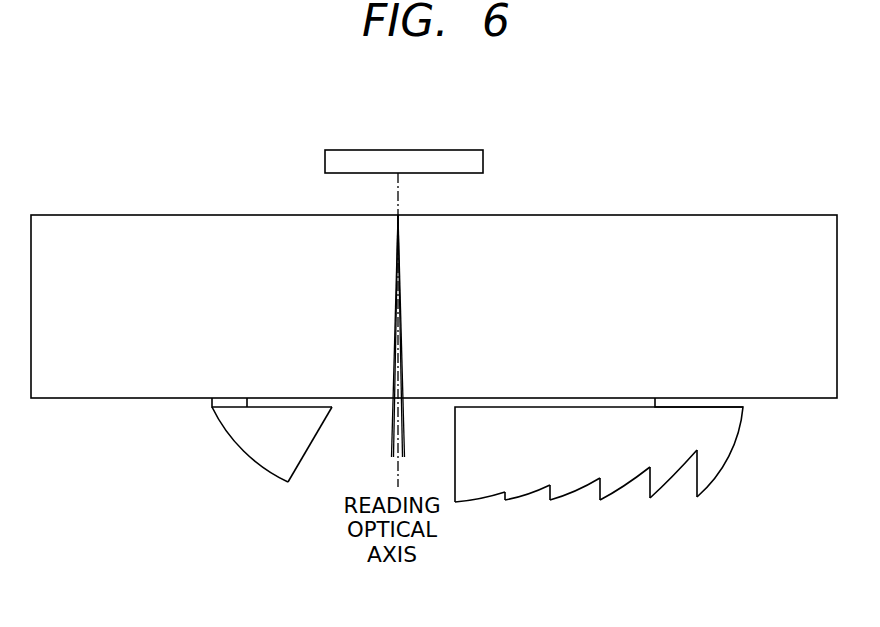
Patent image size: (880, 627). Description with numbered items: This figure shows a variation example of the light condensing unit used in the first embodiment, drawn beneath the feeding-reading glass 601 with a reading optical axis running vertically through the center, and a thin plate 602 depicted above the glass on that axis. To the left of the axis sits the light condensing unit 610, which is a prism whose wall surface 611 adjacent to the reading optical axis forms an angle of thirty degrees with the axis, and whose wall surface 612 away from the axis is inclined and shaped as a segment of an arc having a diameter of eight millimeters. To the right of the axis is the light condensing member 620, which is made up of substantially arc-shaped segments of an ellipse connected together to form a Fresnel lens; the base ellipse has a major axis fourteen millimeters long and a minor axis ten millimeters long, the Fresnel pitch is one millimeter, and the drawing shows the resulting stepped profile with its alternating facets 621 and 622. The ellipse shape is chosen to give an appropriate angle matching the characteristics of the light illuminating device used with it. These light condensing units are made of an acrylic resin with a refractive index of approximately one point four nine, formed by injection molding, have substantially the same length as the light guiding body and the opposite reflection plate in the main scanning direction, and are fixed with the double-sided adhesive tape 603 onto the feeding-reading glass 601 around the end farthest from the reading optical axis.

The feeding-reading glass 601 is at (614, 222).
The original glass / platen 602 is at (414, 150).
The double-sided adhesive tape 603 is at (686, 402).
The light condensing unit 610 is at (284, 415).
The wall surface 611 is at (303, 463).
The wall surface 612 is at (255, 462).
The light condensing member 620 is at (497, 417).
The step surface 621 is at (505, 498).
The reflecting facet 622 is at (537, 494).